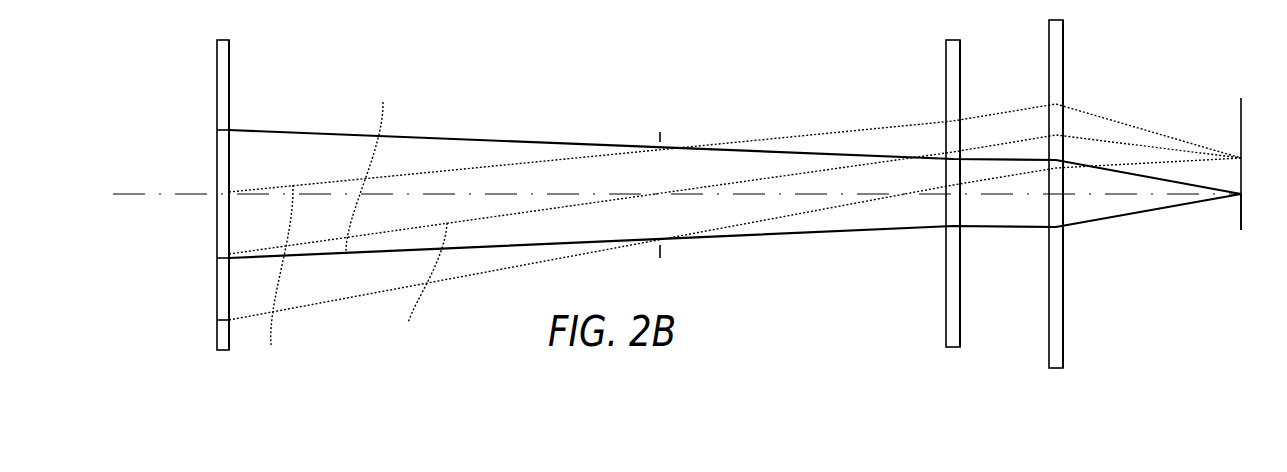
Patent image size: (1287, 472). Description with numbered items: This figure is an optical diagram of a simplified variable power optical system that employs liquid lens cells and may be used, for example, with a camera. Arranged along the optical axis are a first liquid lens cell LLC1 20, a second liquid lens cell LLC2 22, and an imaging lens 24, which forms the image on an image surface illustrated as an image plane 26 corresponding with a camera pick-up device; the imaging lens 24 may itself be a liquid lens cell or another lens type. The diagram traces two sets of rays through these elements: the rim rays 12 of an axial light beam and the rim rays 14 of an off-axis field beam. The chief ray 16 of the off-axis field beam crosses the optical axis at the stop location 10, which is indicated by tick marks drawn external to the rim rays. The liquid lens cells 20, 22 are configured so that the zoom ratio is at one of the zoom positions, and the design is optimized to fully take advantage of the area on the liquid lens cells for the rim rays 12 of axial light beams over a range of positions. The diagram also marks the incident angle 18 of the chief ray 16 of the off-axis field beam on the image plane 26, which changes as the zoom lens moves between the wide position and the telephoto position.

The stop location 10 is at (655, 138).
The rim rays of an axial light beam 12 is at (328, 132).
The rim rays of an off-axis field beam 14 is at (308, 305).
The chief ray of the off-axis field beam 16 is at (423, 288).
The incident angle 18 is at (1212, 147).
The first liquid lens cell LLC1 20 is at (217, 63).
The second liquid lens cell LLC2 22 is at (946, 305).
The imaging lens 24 is at (1063, 325).
The image plane 26 is at (1245, 221).